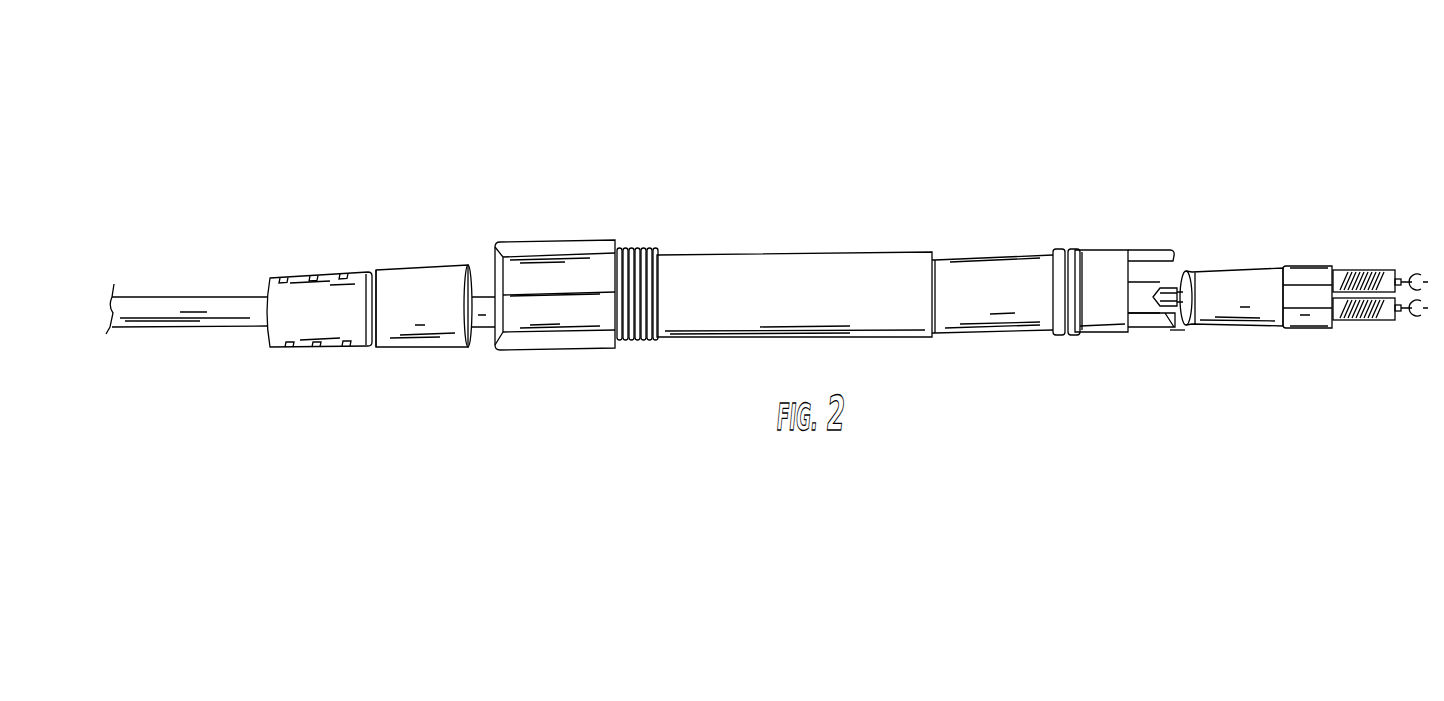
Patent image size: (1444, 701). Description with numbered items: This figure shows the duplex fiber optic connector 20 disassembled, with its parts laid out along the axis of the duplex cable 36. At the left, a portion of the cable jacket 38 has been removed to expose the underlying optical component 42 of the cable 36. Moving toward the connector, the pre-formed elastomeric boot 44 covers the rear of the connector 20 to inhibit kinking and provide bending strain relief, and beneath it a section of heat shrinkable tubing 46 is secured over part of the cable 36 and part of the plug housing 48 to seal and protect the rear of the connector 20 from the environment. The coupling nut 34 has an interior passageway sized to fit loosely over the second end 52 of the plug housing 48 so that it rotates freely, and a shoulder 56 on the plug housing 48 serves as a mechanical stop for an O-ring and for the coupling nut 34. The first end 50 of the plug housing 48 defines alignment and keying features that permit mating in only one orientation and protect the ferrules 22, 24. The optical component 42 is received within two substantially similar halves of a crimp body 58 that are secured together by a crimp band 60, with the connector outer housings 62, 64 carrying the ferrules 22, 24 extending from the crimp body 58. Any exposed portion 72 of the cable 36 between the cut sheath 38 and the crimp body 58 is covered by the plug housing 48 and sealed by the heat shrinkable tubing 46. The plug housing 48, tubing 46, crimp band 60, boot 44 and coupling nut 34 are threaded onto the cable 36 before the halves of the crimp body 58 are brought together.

The connector 20 is at (897, 147).
The ferrule 22 is at (1400, 311).
The ferrule 24 is at (1400, 279).
The coupling nut 34 is at (560, 240).
The duplex cable 36 is at (220, 296).
The cable jacket 38 is at (175, 300).
The optical component 42 is at (1167, 288).
The elastomeric boot 44 is at (410, 267).
The heat shrinkable tubing 46 is at (757, 255).
The plug housing 48 is at (1098, 250).
The first end 50 is at (1240, 243).
The second end 52 is at (1003, 240).
The shoulder 56 is at (1058, 249).
The crimp body 58 is at (1303, 266).
The crimp band 60 is at (1250, 270).
The connector outer housing 62 is at (1362, 320).
The connector outer housing 64 is at (1353, 270).
The exposed portion 72 is at (1178, 333).